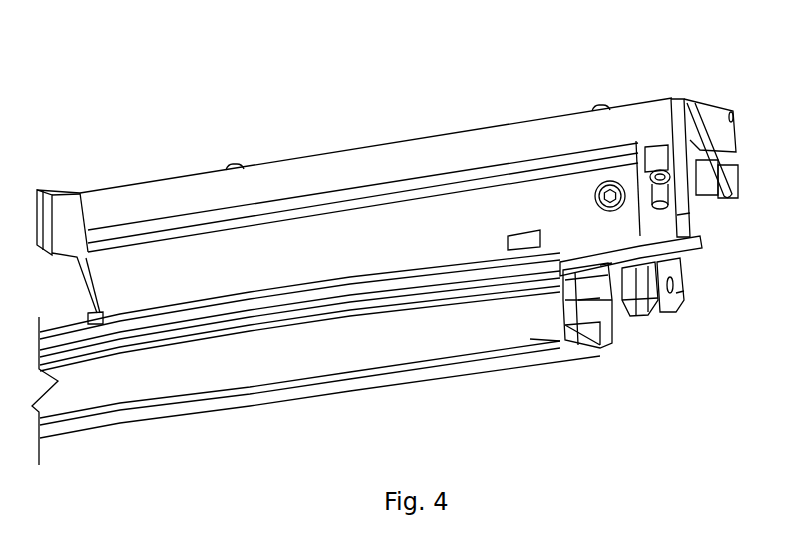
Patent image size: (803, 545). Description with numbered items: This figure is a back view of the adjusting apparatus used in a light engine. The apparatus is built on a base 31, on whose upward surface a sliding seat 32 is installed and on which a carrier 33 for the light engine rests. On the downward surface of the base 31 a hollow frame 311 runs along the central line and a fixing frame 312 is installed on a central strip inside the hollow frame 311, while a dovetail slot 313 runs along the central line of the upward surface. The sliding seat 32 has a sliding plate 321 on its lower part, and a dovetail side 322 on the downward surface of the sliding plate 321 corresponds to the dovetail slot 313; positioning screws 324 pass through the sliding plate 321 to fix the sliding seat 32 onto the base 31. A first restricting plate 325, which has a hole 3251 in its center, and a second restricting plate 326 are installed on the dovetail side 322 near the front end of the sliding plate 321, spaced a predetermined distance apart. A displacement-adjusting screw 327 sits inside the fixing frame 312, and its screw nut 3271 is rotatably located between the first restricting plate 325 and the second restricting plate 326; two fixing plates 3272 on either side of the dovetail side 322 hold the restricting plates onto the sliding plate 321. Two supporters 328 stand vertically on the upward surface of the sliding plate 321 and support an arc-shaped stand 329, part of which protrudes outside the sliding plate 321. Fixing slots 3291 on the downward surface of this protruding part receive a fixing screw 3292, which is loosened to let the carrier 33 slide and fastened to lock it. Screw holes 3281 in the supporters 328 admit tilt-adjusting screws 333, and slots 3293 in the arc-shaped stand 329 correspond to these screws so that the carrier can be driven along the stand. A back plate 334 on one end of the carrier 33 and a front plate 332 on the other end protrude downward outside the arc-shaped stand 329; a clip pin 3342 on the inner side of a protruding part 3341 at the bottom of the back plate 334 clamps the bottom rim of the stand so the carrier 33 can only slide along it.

The base 31 is at (72, 338).
The hollow frame 311 is at (300, 362).
The fixing frame 312 is at (563, 300).
The dovetail slot 313 is at (540, 303).
The sliding seat 32 is at (182, 283).
The sliding plate 321 is at (260, 290).
The dovetail side 322 is at (563, 267).
The positioning screw 324 is at (517, 222).
The first restricting plate 325 is at (673, 313).
The hole 3251 is at (677, 293).
The second restricting plate 326 is at (627, 313).
The displacement-adjusting screw 327 is at (610, 303).
The screw nut 3271 is at (653, 303).
The fixing plate 3272 is at (663, 270).
The supporter 328 is at (687, 230).
The screw hole 3281 is at (687, 217).
The arc-shaped stand 329 is at (637, 147).
The fixing slot 3291 is at (700, 117).
The fixing screw 3292 is at (670, 180).
The slot 3293 is at (640, 165).
The carrier 33 is at (337, 167).
The front plate 332 is at (53, 202).
The tilt-adjusting screw 333 is at (593, 180).
The back plate 334 is at (693, 113).
The protruding part 3341 is at (725, 193).
The clip pin 3342 is at (707, 183).